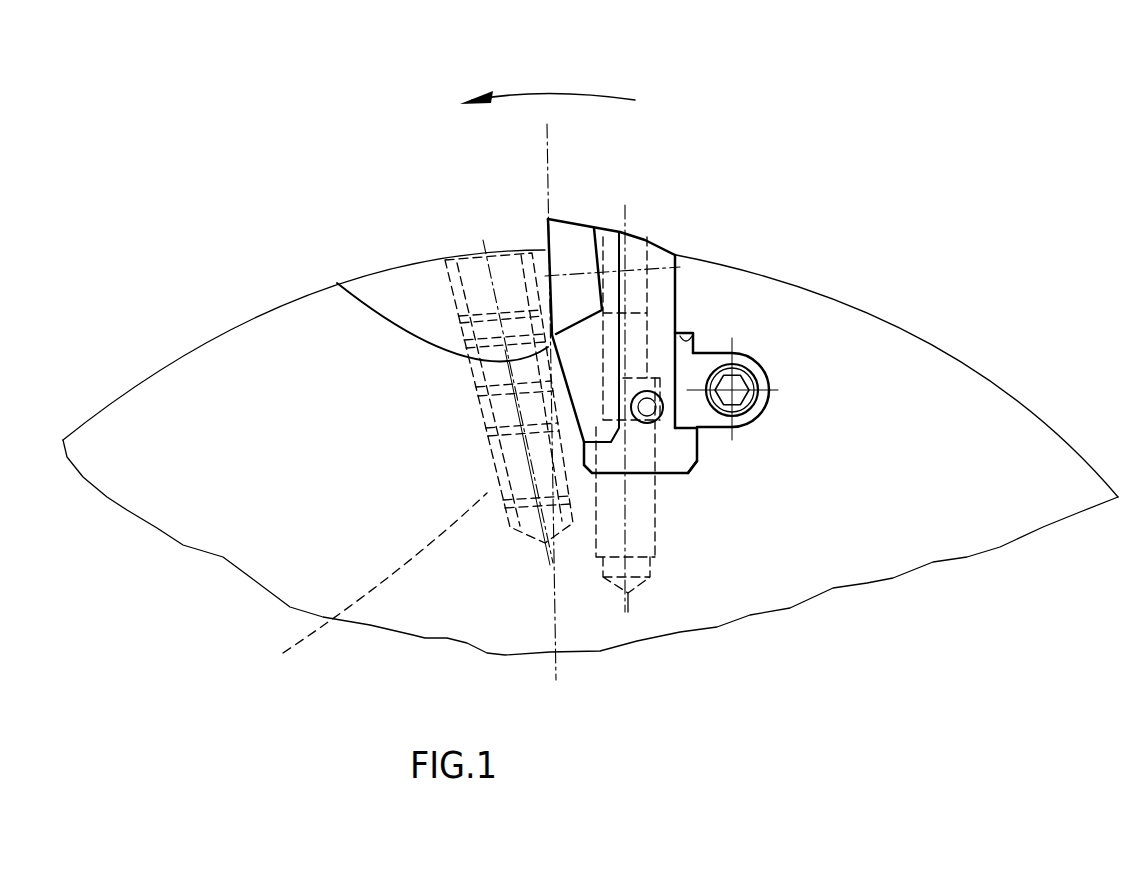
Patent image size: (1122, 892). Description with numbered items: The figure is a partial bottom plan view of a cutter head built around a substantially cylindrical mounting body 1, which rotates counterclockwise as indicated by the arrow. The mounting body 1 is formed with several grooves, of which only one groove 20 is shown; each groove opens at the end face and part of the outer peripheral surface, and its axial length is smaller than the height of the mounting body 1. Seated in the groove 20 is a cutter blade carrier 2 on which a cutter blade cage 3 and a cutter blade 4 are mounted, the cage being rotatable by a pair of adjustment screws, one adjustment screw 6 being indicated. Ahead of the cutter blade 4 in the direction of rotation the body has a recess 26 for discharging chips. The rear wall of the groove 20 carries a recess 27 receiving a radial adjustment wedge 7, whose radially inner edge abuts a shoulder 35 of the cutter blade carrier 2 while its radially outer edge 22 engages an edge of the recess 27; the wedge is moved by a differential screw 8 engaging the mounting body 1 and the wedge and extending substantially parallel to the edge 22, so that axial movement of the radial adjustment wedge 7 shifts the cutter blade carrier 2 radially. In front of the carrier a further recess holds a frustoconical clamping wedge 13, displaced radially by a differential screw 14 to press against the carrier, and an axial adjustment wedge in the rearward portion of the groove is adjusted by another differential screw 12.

The mounting body 1 is at (263, 403).
The recess 26 is at (410, 300).
The clamping wedge 13 is at (527, 267).
The cutter blade 4 is at (570, 255).
The cutter blade cage 3 is at (578, 368).
The groove 20 is at (675, 290).
The cutter blade carrier 2 is at (688, 334).
The radially outer edge 22 is at (705, 345).
The recess 27 is at (757, 377).
The differential screw 8 is at (747, 385).
The radial adjustment wedge 7 is at (687, 417).
The adjustment screw 6 is at (647, 407).
The differential screw 12 is at (650, 567).
The shoulder 35 is at (697, 447).
The differential screw 14 is at (370, 580).